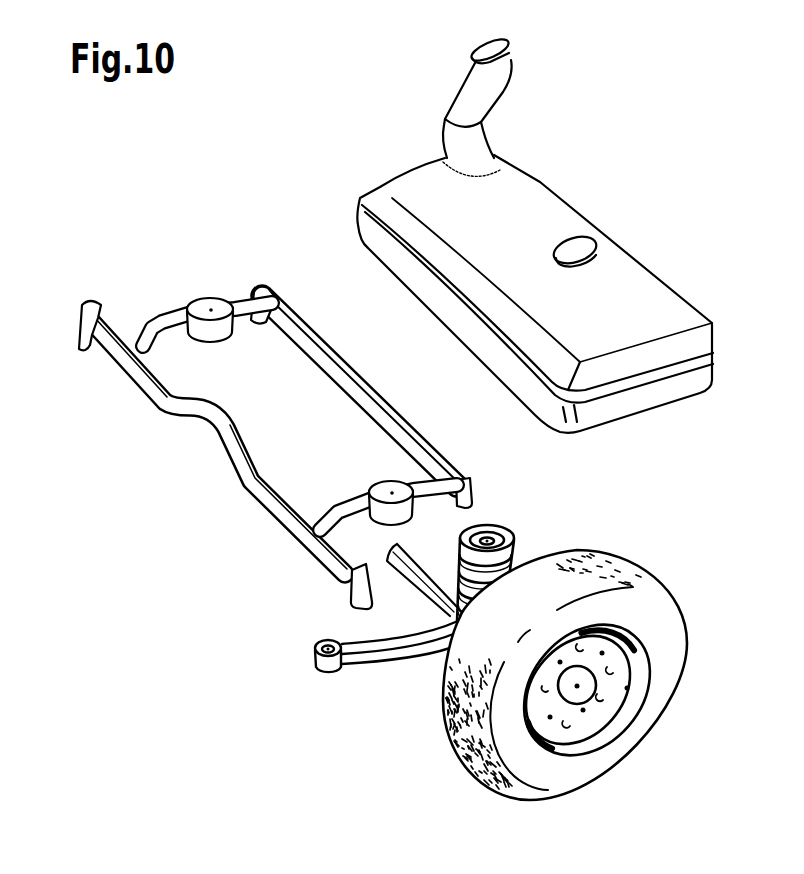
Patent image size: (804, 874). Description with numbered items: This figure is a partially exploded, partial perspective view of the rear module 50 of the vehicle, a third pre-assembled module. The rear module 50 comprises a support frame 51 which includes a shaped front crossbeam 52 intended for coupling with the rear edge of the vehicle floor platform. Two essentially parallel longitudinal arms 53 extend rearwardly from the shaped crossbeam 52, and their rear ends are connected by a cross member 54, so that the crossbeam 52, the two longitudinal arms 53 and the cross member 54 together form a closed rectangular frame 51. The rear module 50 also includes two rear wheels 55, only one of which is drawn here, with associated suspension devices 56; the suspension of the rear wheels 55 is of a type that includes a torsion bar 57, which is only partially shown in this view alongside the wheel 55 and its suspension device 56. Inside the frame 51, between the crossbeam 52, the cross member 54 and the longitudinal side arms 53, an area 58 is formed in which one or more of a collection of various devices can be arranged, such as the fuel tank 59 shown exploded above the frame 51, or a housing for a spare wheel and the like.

The rear module 50 is at (300, 218).
The support frame 51 is at (200, 454).
The shaped front crossbeam 52 is at (278, 522).
The longitudinal arms 53 is at (243, 297).
The cross member 54 is at (370, 408).
The rear wheels 55 is at (447, 735).
The suspension devices 56 is at (415, 680).
The torsion bar 57 is at (430, 575).
The area 58 is at (325, 413).
The fuel tank 59 is at (553, 232).